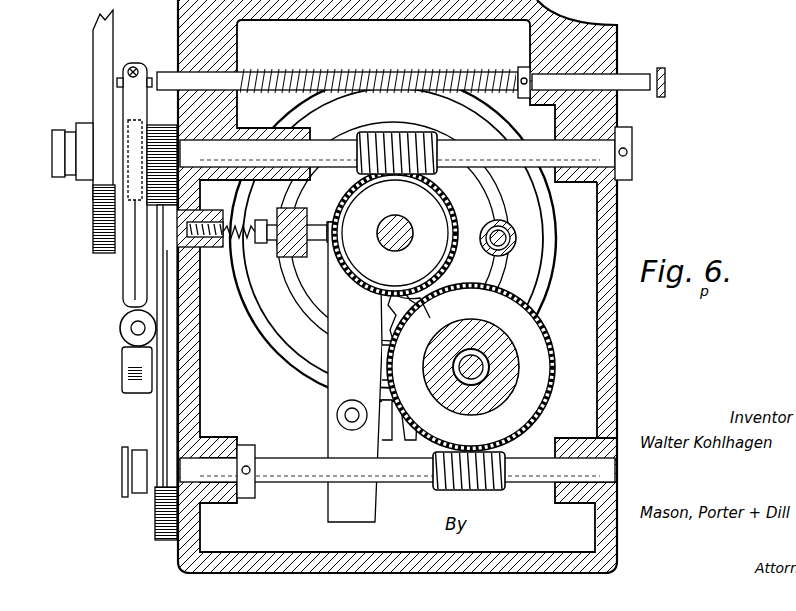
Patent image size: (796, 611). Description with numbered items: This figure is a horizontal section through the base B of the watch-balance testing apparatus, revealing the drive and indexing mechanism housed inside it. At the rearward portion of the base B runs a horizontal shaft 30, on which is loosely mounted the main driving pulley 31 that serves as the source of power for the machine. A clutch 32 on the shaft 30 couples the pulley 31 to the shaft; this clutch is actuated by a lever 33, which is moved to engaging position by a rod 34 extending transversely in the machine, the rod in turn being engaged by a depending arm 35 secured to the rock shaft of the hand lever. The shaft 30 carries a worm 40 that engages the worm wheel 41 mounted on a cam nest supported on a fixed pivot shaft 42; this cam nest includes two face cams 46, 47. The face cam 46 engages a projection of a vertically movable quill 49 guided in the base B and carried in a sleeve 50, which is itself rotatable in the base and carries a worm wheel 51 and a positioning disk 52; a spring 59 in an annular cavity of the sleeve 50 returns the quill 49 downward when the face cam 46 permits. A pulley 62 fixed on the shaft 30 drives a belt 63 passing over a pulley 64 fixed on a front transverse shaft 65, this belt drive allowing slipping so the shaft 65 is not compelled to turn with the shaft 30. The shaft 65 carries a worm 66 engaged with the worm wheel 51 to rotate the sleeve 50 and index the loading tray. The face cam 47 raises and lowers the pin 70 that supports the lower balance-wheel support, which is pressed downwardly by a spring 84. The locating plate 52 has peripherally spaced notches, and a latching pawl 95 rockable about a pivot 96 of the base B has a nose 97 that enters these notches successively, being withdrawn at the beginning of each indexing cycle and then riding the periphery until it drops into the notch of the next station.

The horizontal shaft 30 is at (247, 153).
The main driving pulley 31 is at (93, 60).
The clutch 32 is at (122, 132).
The lever 33 is at (128, 268).
The rod 34 is at (172, 78).
The depending arm 35 is at (663, 70).
The worm 40 is at (393, 133).
The worm wheel 41 is at (395, 233).
The fixed pivot shaft 42 is at (394, 219).
The face cam 46 is at (258, 302).
The face cam 47 is at (307, 293).
The quill 49 is at (490, 365).
The sleeve 50 is at (507, 347).
The worm wheel 51 is at (537, 397).
The positioning disk 52 is at (413, 317).
The spring 59 is at (532, 307).
The pulley 62 is at (162, 128).
The driving belt 63 is at (163, 413).
The pulley 64 is at (157, 517).
The front transverse shaft 65 is at (285, 458).
The worm 66 is at (437, 490).
The pin 70 is at (505, 217).
The spring 84 is at (516, 238).
The latching pawl 95 is at (335, 383).
The pivot 96 is at (343, 413).
The nose 97 is at (403, 330).
The base B is at (187, 550).